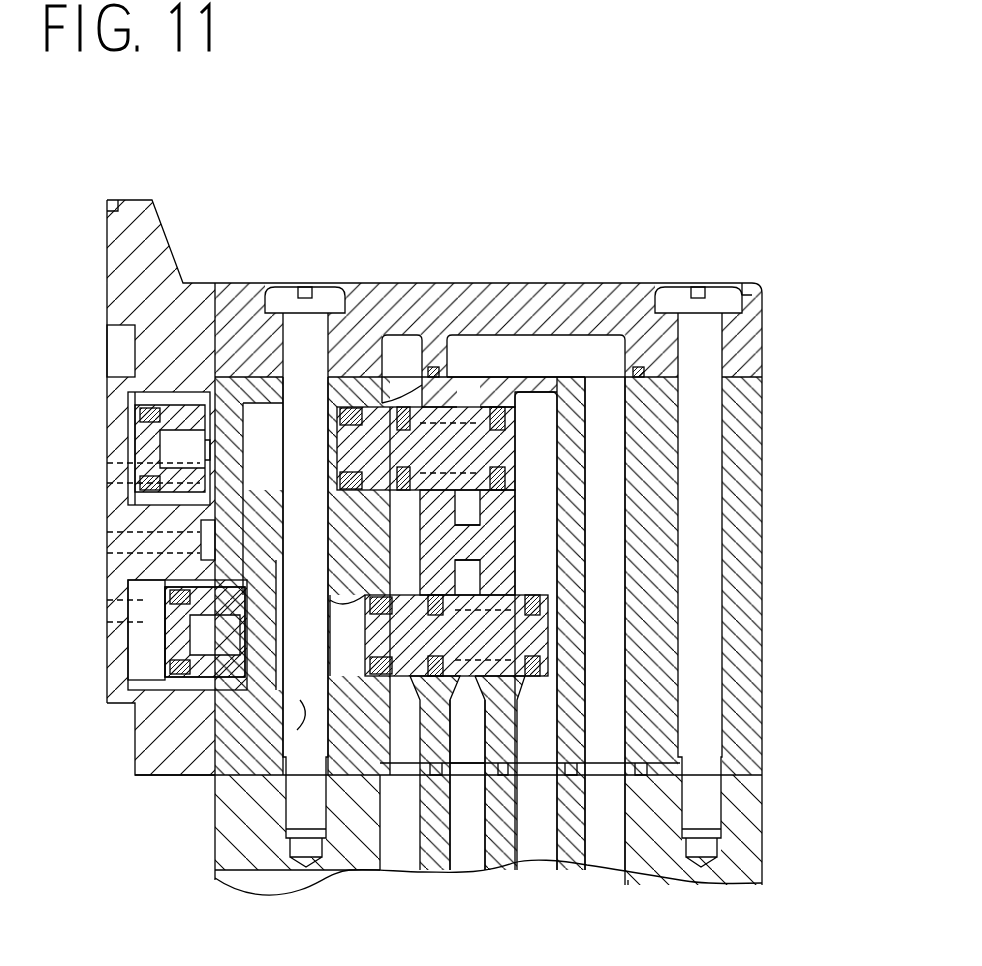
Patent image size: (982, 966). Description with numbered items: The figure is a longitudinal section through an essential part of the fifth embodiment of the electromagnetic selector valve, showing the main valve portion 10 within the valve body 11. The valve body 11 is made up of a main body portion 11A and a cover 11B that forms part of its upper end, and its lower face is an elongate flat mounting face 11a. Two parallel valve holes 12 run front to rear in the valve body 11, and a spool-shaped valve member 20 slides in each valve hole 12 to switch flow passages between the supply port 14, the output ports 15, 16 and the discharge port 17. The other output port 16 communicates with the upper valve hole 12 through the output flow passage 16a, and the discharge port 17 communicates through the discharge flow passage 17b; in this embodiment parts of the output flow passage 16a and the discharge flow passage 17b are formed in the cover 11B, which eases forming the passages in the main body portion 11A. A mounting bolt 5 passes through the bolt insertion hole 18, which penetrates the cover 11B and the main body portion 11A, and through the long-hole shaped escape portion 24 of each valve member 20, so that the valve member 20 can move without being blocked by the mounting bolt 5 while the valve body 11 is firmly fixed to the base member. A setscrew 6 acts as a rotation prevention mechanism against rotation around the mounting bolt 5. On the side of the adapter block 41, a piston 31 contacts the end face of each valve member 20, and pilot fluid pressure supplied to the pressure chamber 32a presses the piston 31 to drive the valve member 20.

The main valve portion 10 is at (600, 237).
The valve body 11 is at (800, 334).
The main body portion 11A is at (746, 527).
The cover 11B is at (630, 303).
The mounting face 11a is at (740, 777).
The adapter block 41 is at (147, 245).
The escape portion 24 is at (263, 440).
The mounting bolt 5 is at (307, 377).
The setscrew 6 is at (696, 676).
The discharge flow passage 17b is at (405, 390).
The discharge port 17 is at (400, 745).
The output port 15 is at (472, 745).
The valve hole 12 is at (505, 745).
The supply port 14 is at (540, 745).
The output port 16 is at (603, 745).
The output flow passage 16a is at (533, 358).
The valve member 20 is at (471, 392).
The piston 31 is at (140, 478).
The pressure chamber 32a is at (150, 638).
The bolt insertion hole 18 is at (297, 717).